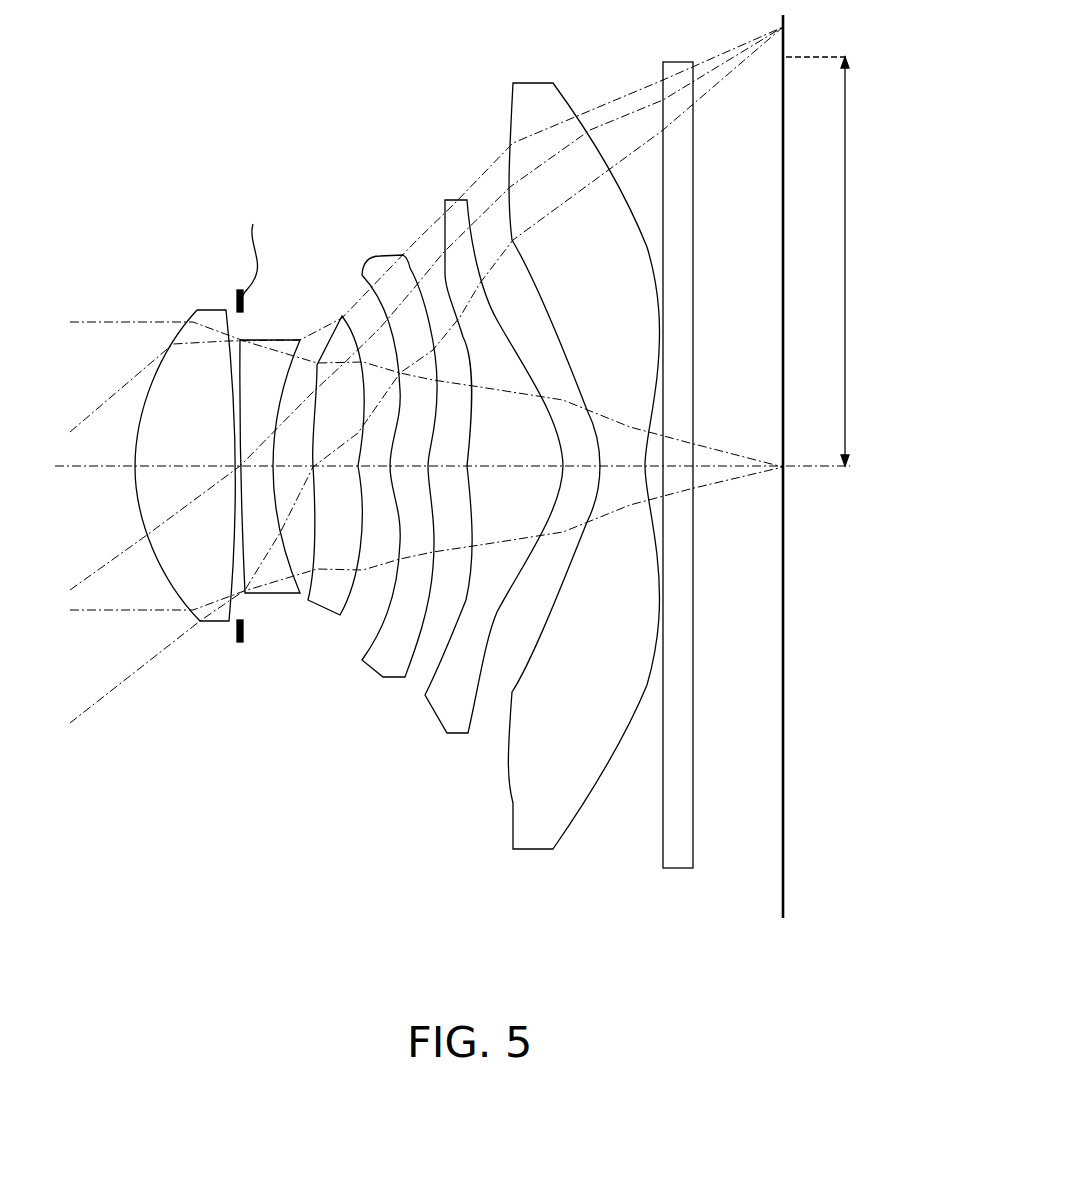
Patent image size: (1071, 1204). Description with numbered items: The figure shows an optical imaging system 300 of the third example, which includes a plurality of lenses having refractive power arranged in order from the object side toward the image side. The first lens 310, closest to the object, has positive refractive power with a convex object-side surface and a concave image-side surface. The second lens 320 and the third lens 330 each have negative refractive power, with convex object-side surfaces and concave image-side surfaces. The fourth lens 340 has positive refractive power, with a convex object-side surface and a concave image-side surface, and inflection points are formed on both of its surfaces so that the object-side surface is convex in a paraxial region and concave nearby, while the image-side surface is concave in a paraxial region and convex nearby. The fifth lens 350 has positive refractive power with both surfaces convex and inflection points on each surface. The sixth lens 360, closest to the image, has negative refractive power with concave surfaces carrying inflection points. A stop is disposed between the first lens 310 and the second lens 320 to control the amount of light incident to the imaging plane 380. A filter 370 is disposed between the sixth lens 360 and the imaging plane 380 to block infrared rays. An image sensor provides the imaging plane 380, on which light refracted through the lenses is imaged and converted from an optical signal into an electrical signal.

The optical imaging system 300 is at (382, 99).
The first lens 310 is at (213, 625).
The second lens 320 is at (270, 603).
The third lens 330 is at (323, 612).
The fourth lens 340 is at (377, 667).
The fifth lens 350 is at (440, 717).
The sixth lens 360 is at (535, 841).
The filter 370 is at (675, 861).
The imaging plane 380 is at (781, 867).